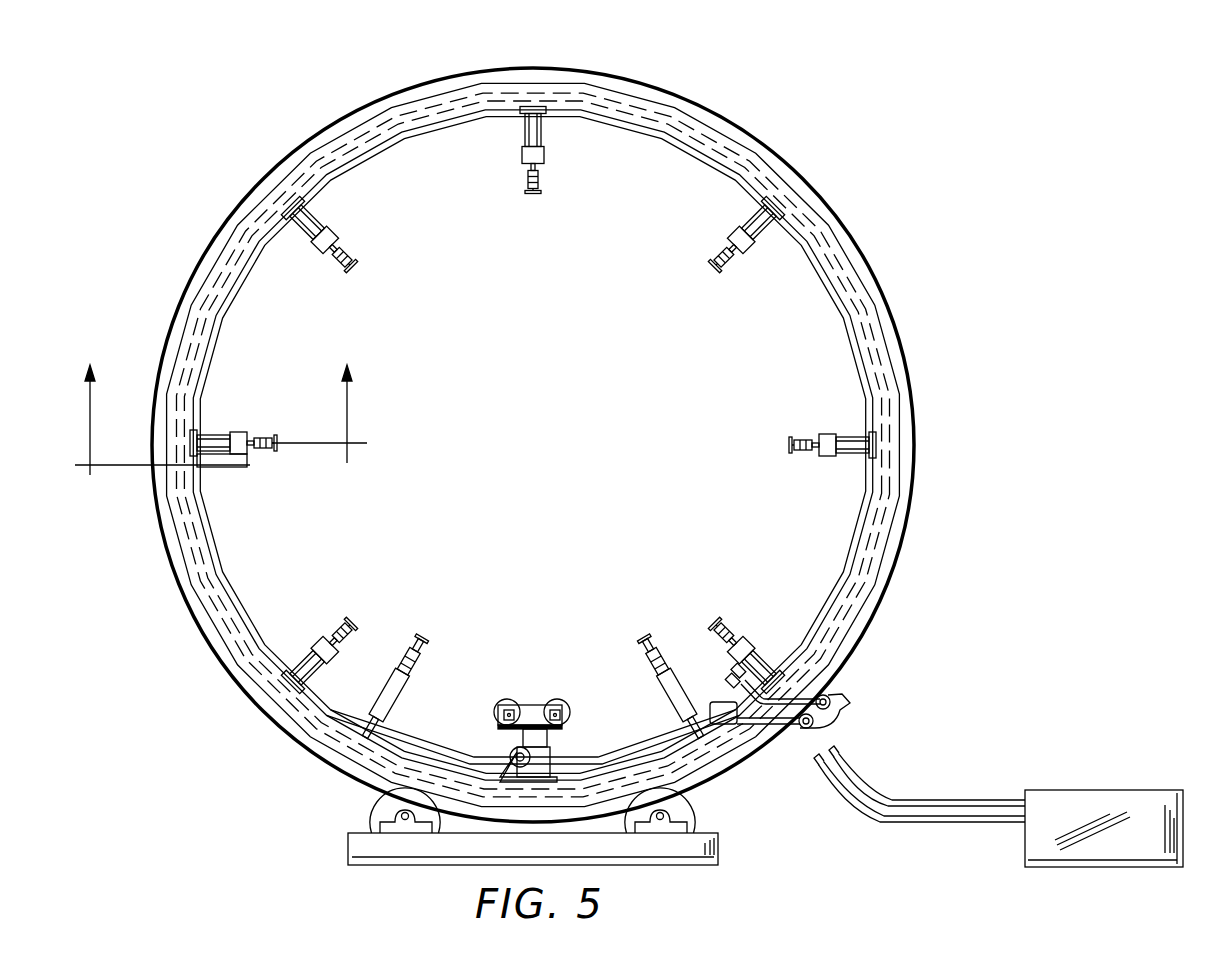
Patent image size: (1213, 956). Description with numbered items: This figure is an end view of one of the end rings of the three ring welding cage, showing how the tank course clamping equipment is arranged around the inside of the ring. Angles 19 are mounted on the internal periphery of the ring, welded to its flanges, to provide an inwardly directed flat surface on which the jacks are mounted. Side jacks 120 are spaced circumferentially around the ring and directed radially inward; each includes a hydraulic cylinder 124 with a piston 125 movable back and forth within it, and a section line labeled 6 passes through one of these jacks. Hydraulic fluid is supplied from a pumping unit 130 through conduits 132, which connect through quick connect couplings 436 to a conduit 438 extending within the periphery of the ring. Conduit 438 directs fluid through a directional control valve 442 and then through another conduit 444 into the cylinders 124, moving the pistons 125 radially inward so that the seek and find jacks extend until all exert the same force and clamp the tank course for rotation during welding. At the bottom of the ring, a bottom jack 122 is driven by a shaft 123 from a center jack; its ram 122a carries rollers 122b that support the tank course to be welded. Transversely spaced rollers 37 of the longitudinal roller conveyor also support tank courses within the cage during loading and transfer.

The angles 19 is at (900, 532).
The conduit 444 is at (813, 177).
The conduit 438 is at (827, 306).
The side jacks 120 is at (307, 250).
The hydraulic cylinders 124 is at (848, 443).
The piston 125 is at (823, 452).
The section line 6- 6 is at (217, 431).
The rollers 37 is at (643, 640).
The directional control valve 442 is at (720, 700).
The quick connect couplings 436 is at (836, 704).
The bottom jack 122 is at (530, 711).
The ram 122a is at (546, 742).
The rollers 122b is at (560, 700).
The shaft 123 is at (513, 756).
The conduits 132 is at (868, 795).
The pumping unit 130 is at (1112, 800).